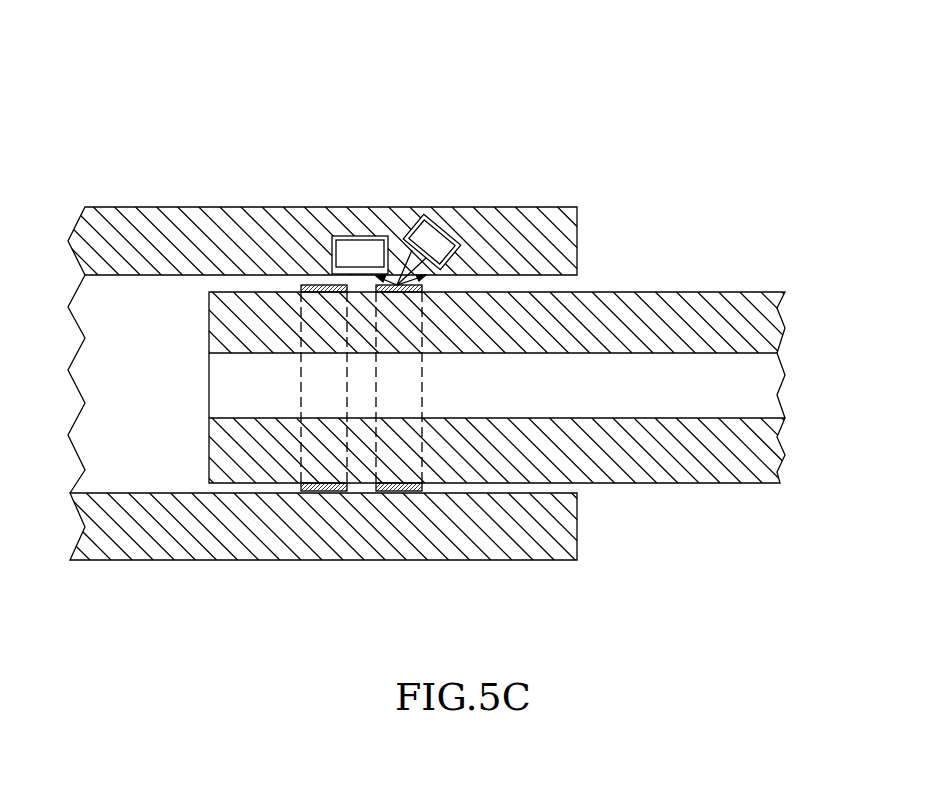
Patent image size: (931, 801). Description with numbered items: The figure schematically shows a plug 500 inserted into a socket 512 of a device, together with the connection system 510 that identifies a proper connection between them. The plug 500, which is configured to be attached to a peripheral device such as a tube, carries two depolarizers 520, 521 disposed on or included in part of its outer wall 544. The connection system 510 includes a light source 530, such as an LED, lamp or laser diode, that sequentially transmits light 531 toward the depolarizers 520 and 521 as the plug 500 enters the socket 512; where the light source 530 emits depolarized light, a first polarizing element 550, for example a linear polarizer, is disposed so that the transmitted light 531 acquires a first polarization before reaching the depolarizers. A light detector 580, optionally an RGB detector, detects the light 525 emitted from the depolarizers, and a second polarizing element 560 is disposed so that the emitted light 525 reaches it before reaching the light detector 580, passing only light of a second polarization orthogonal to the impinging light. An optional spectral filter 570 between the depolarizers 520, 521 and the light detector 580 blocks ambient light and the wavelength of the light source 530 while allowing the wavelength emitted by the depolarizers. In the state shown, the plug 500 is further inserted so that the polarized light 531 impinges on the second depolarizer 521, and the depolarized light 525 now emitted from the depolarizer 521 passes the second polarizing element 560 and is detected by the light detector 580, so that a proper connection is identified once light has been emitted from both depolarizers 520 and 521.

The plug 500 is at (487, 359).
The connection system 510 is at (150, 72).
The socket 512 is at (130, 207).
The depolarizer 520 is at (328, 491).
The depolarizer 521 is at (402, 491).
The emitted light 525 is at (342, 274).
The light source 530 is at (455, 222).
The transmitted light 531 is at (358, 278).
The outer wall 544 is at (620, 484).
The first polarizing element 550 is at (438, 232).
The second polarizing element 560 is at (303, 282).
The spectral filter 570 is at (348, 288).
The light detector 580 is at (373, 236).